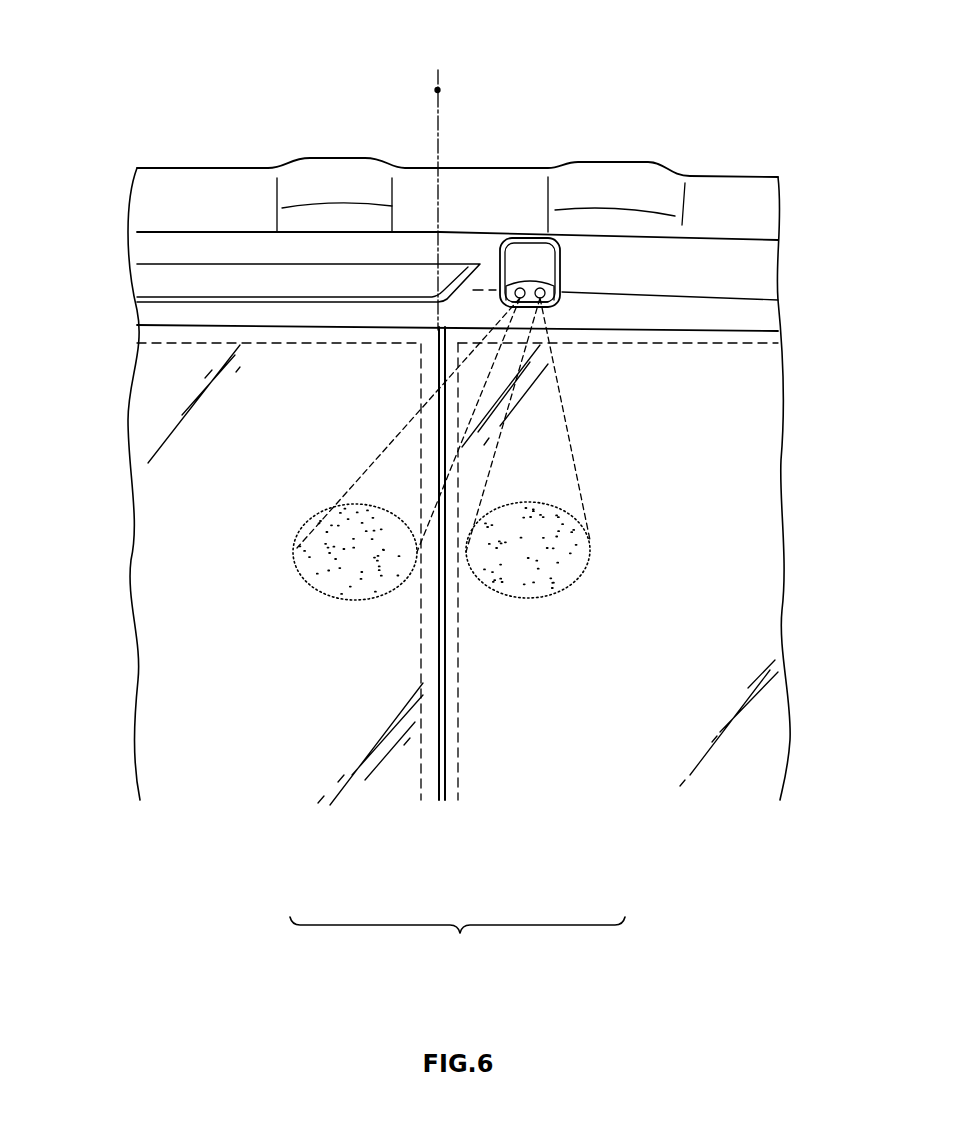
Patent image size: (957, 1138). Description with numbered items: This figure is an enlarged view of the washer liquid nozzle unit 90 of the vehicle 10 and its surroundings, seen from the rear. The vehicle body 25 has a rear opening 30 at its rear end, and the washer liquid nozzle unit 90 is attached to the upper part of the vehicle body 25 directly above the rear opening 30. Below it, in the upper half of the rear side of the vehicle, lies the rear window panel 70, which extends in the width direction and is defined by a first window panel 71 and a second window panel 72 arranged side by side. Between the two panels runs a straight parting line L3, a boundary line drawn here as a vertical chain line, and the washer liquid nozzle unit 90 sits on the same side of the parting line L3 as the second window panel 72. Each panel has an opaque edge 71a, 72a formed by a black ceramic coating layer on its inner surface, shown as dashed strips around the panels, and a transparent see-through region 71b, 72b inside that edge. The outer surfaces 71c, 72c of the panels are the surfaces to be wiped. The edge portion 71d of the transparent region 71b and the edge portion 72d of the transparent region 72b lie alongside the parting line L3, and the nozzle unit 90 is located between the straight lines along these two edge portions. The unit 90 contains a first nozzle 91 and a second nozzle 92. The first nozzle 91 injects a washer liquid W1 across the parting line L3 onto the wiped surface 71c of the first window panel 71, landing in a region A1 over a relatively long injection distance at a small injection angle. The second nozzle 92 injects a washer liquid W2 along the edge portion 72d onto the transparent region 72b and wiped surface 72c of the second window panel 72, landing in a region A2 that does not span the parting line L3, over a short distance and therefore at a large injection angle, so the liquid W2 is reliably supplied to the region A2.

The vehicle 10 is at (146, 97).
The vehicle body 25 is at (192, 185).
The parting line L3 is at (435, 90).
The washer liquid nozzle unit 90 is at (530, 258).
The first nozzle 91 is at (500, 288).
The second nozzle 92 is at (560, 288).
The rear opening 30 is at (648, 360).
The rear window panel 70 is at (457, 945).
The first window panel 71 is at (293, 788).
The second window panel 72 is at (611, 780).
The opaque edge of first window panel 71a is at (183, 336).
The opaque edge of second window panel 72a is at (723, 347).
The transparent region of first window panel 71b is at (180, 530).
The transparent region of second window panel 72b is at (747, 519).
The outer surface of first window panel 71c is at (180, 673).
The outer surface of second window panel 72c is at (752, 647).
The edge portion of transparent region of first window panel 71d is at (428, 668).
The edge portion of transparent region of second window panel 72d is at (457, 668).
The washer liquid W1 is at (400, 427).
The washer liquid W2 is at (566, 418).
The region A1 is at (296, 564).
The region A2 is at (587, 572).